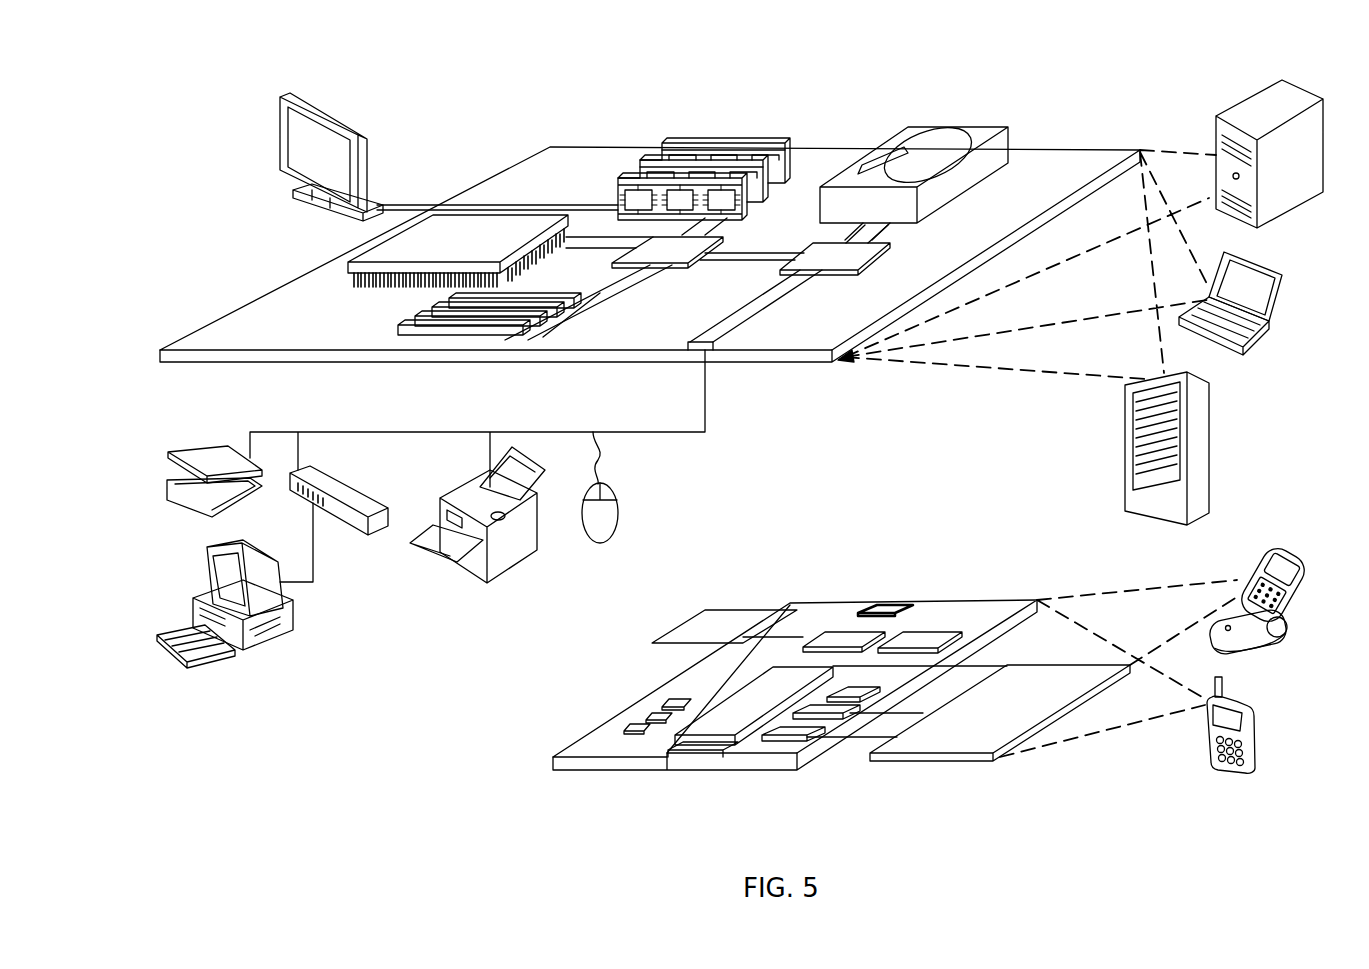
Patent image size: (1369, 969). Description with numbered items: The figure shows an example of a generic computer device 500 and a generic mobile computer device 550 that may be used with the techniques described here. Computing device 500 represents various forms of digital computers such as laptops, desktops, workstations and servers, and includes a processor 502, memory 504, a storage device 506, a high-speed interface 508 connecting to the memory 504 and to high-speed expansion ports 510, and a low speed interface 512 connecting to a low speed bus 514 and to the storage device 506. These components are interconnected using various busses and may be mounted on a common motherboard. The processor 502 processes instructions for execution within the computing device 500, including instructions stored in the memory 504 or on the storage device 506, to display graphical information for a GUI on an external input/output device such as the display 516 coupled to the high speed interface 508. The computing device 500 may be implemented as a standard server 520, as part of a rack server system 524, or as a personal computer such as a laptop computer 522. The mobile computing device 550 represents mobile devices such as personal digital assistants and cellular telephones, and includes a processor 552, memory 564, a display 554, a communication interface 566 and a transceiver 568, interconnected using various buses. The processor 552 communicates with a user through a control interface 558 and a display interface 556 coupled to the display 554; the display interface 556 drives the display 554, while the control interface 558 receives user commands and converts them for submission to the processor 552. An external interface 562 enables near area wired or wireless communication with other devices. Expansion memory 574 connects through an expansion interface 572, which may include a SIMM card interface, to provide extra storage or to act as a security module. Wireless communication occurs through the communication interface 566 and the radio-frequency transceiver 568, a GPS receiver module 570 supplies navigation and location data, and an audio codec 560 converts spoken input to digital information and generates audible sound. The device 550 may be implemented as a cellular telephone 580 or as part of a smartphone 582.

The computing device 500 is at (470, 122).
The processor 502 is at (348, 266).
The memory 504 is at (678, 150).
The storage device 506 is at (910, 130).
The high-speed interface 508 is at (645, 250).
The high-speed expansion ports 510 is at (423, 320).
The low speed interface 512 is at (818, 250).
The low speed bus 514 is at (713, 345).
The display 516 is at (286, 100).
The standard server 520 is at (1216, 136).
The laptop computer 522 is at (1282, 276).
The rack server system 524 is at (1125, 475).
The mobile computing device 550 is at (524, 772).
The processor 552 is at (724, 738).
The display 554 is at (960, 746).
The display interface 556 is at (806, 740).
The control interface 558 is at (838, 718).
The audio codec 560 is at (857, 693).
The external interface 562 is at (692, 757).
The memory 564 is at (648, 724).
The communication interface 566 is at (845, 640).
The transceiver 568 is at (925, 640).
The GPS receiver module 570 is at (893, 606).
The expansion interface 572 is at (787, 613).
The expansion memory 574 is at (773, 614).
The cellular telephone 580 is at (1265, 575).
The smartphone 582 is at (1208, 730).